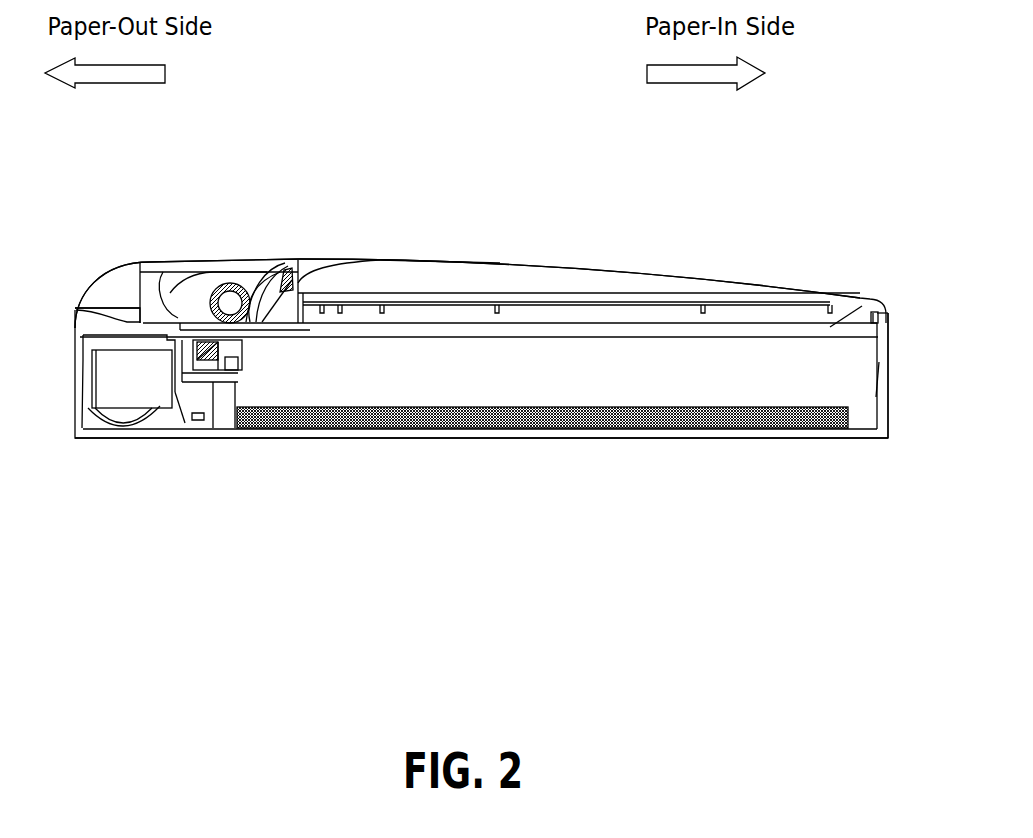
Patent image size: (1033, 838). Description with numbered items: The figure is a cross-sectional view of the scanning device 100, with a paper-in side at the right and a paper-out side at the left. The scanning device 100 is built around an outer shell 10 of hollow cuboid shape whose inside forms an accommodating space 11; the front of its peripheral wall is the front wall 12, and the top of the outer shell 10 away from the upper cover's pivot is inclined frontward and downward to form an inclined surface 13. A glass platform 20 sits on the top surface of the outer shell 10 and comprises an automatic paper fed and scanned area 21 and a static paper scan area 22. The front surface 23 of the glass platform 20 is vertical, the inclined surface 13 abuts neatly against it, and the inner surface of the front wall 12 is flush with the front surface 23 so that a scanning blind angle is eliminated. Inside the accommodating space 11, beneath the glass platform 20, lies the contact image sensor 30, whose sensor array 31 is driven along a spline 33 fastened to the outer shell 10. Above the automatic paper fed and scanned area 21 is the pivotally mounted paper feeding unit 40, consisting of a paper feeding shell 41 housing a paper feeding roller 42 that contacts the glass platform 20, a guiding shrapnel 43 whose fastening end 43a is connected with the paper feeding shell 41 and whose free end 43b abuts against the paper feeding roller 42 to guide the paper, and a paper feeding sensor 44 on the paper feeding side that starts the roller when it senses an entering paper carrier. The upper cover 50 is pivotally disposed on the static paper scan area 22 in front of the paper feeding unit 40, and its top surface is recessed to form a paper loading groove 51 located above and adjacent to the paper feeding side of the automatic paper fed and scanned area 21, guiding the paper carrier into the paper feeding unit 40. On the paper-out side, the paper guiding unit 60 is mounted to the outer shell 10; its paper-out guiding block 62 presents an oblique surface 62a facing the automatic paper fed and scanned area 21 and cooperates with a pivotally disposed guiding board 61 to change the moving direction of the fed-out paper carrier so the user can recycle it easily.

The scanning device 100 is at (522, 253).
The outer shell 10 is at (757, 438).
The accommodating space 11 is at (858, 388).
The front wall 12 is at (886, 400).
The inclined surface 13 is at (889, 345).
The glass platform 20 is at (858, 298).
The automatic paper fed and scanned area 21 is at (243, 330).
The static paper scan area 22 is at (623, 338).
The front surface 23 is at (889, 311).
The contact image sensor 30 is at (247, 385).
The sensor array 31 is at (243, 352).
The spline 33 is at (485, 406).
The paper feeding unit 40 is at (306, 255).
The paper feeding shell 41 is at (190, 272).
The paper feeding roller 42 is at (220, 283).
The guiding shrapnel 43 is at (262, 275).
The fastening end 43a is at (240, 273).
The free end 43b is at (285, 283).
The paper feeding sensor 44 is at (360, 264).
The upper cover 50 is at (634, 272).
The paper loading groove 51 is at (423, 283).
The paper guiding unit 60 is at (121, 264).
The guiding board 61 is at (161, 262).
The paper-out guiding block 62 is at (75, 308).
The oblique surface 62a is at (140, 308).